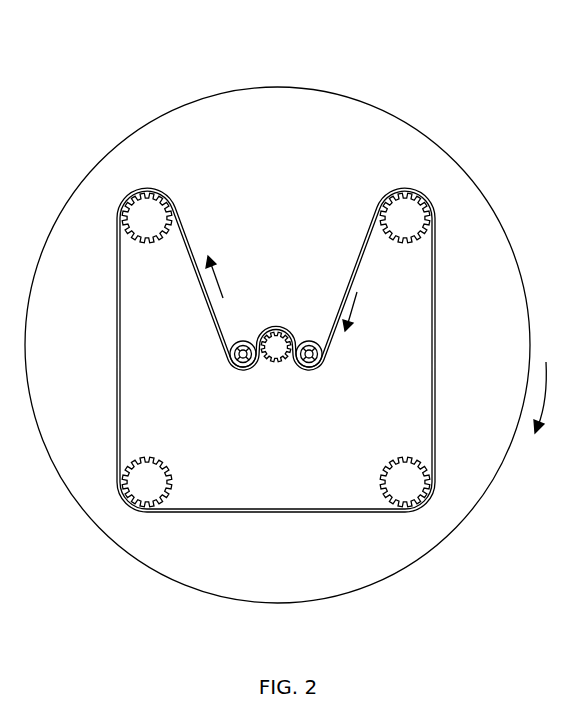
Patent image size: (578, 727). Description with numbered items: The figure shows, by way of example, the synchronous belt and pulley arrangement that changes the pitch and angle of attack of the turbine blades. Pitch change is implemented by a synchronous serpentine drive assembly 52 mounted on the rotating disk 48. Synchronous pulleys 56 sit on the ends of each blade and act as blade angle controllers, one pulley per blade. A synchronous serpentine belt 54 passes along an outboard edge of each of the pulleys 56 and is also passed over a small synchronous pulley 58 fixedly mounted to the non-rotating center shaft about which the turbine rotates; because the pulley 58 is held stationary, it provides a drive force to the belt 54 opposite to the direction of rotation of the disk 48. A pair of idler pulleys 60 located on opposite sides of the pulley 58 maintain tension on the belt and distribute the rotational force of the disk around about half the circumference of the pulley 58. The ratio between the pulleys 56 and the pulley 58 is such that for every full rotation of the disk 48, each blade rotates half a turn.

The disk 48 is at (251, 87).
The synchronous serpentine drive assembly 52 is at (368, 129).
The synchronous serpentine belt 54 is at (438, 257).
The synchronous pulleys 56 is at (160, 240).
The synchronous pulley 58 is at (277, 367).
The idler pulleys 60 is at (245, 340).